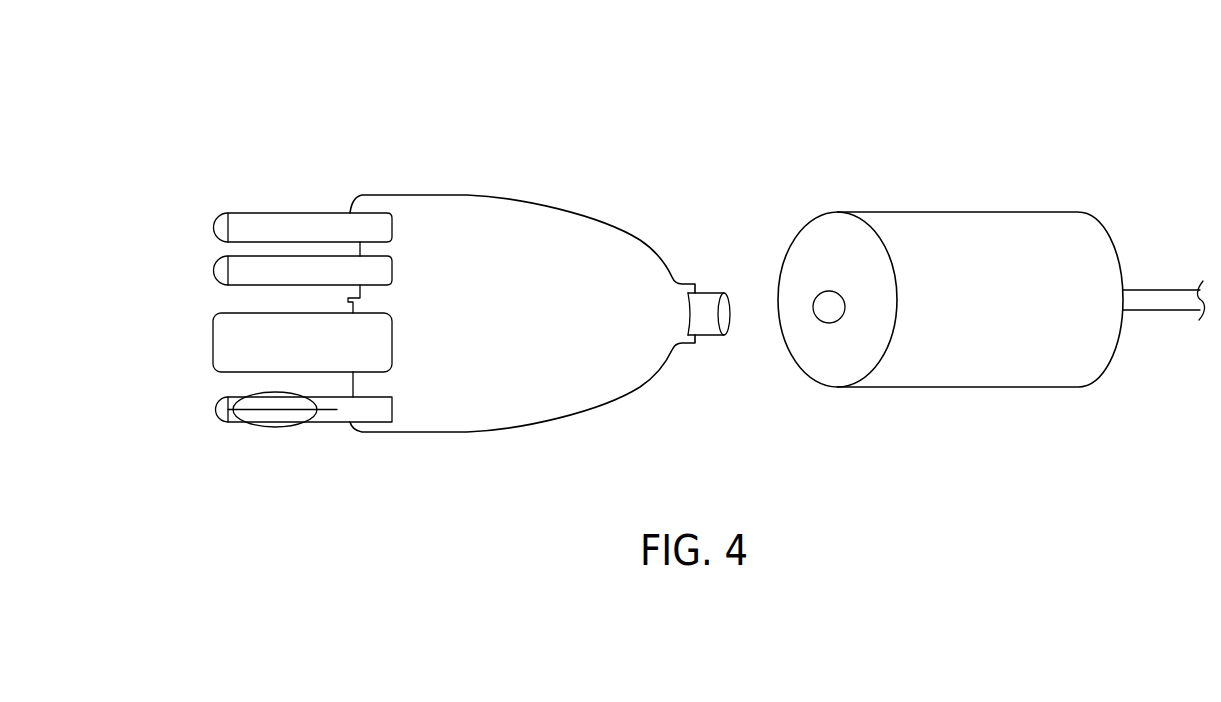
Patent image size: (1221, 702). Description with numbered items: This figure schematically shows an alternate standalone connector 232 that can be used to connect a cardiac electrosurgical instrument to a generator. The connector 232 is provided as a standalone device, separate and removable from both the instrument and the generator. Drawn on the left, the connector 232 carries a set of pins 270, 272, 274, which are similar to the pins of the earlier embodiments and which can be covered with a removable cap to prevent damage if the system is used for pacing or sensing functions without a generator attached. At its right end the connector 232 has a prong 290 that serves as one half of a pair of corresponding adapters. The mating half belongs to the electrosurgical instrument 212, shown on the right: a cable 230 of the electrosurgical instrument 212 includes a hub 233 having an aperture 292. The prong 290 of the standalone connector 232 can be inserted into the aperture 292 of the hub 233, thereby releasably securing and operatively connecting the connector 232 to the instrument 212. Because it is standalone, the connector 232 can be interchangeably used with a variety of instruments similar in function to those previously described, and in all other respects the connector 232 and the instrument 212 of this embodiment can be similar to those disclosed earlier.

The connector 232 is at (426, 119).
The pin 270 is at (213, 227).
The pin 274 is at (213, 350).
The pin 272 is at (213, 410).
The prong 290 is at (710, 337).
The electrosurgical instrument 212 is at (948, 253).
The hub 233 is at (953, 228).
The aperture 292 is at (829, 291).
The cable 230 is at (1152, 288).